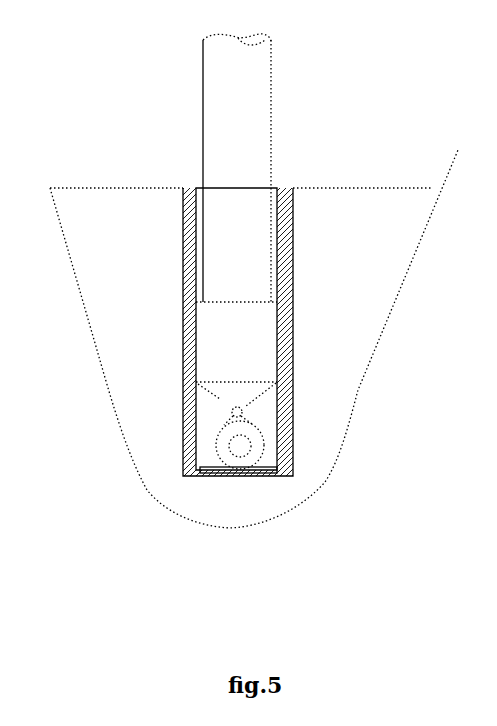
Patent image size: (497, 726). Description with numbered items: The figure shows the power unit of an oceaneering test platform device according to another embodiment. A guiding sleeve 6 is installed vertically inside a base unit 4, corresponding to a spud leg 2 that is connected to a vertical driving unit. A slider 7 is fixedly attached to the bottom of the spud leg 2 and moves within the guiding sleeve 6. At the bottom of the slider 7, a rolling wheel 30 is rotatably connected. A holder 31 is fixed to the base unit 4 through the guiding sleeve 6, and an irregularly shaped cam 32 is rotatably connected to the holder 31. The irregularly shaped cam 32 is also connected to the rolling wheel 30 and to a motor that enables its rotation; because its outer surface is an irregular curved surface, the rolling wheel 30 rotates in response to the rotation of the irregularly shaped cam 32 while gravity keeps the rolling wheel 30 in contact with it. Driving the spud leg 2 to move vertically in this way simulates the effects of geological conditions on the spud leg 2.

The spud leg 2 is at (233, 148).
The base unit 4 is at (323, 360).
The guiding sleeve 6 is at (293, 276).
The slider 7 is at (213, 350).
The rolling wheel 30 is at (243, 413).
The holder 31 is at (215, 468).
The irregularly shaped cam 32 is at (246, 449).